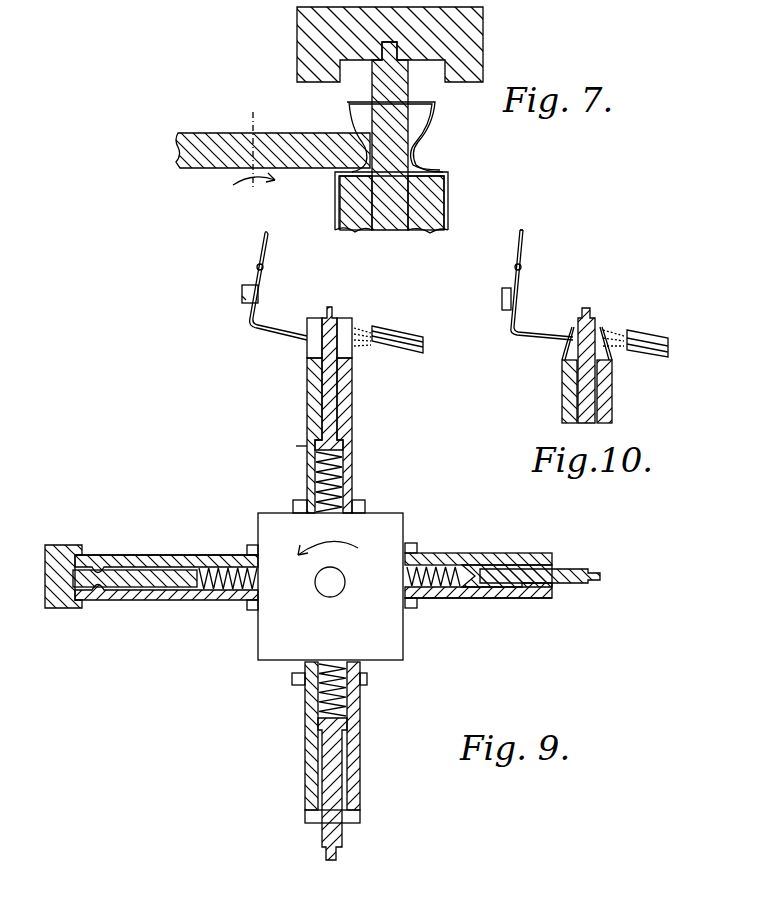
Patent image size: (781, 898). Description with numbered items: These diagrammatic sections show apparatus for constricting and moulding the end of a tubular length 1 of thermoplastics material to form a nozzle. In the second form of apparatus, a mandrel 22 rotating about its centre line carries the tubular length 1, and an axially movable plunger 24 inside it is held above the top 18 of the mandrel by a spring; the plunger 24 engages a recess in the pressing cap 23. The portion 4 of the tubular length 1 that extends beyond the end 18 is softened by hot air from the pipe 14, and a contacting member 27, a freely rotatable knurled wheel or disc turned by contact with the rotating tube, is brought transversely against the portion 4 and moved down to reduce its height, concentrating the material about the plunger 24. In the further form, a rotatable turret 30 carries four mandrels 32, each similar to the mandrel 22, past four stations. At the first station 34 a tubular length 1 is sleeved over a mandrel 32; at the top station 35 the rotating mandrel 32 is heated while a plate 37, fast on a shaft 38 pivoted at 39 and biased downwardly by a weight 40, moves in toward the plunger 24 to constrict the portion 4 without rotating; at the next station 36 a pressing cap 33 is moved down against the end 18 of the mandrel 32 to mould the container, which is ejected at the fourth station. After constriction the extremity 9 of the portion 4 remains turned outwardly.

In FIG. 9, the tubular length 1 is at (356, 466).
In FIG. 7, the portion of the tubular length 4 is at (418, 155).
In FIG. 9, the portion of the tubular length 4 is at (307, 350).
In FIG. 10, the portion of the tubular length 4 is at (570, 350).
In FIG. 7, the extremity of the section 9 is at (438, 112).
In FIG. 9, the pipe 14 is at (406, 350).
In FIG. 10, the pipe 14 is at (641, 335).
In FIG. 9, the top of the mandrel 18 is at (100, 600).
In FIG. 7, the mandrel 22 is at (358, 220).
In FIG. 7, the pressing cap 23 is at (308, 21).
In FIG. 7, the plunger 24 is at (400, 212).
In FIG. 9, the plunger 24 is at (336, 412).
In FIG. 10, the plunger 24 is at (586, 365).
In FIG. 7, the contacting member 27 is at (203, 137).
In FIG. 9, the turret 30 is at (330, 586).
In FIG. 9, the mandrel 32 is at (355, 428).
In FIG. 10, the mandrel 32 is at (592, 407).
In FIG. 9, the pressing cap 33 is at (63, 605).
In FIG. 9, the first station 34 is at (482, 603).
In FIG. 9, the top station 35 is at (296, 446).
In FIG. 9, the station 36 is at (192, 547).
In FIG. 9, the plate 37 is at (270, 344).
In FIG. 10, the plate 37 is at (533, 330).
In FIG. 9, the shaft 38 is at (242, 293).
In FIG. 10, the shaft 38 is at (525, 236).
In FIG. 9, the pivot 39 is at (257, 267).
In FIG. 10, the pivot 39 is at (522, 267).
In FIG. 9, the weight 40 is at (240, 305).
In FIG. 10, the weight 40 is at (502, 306).